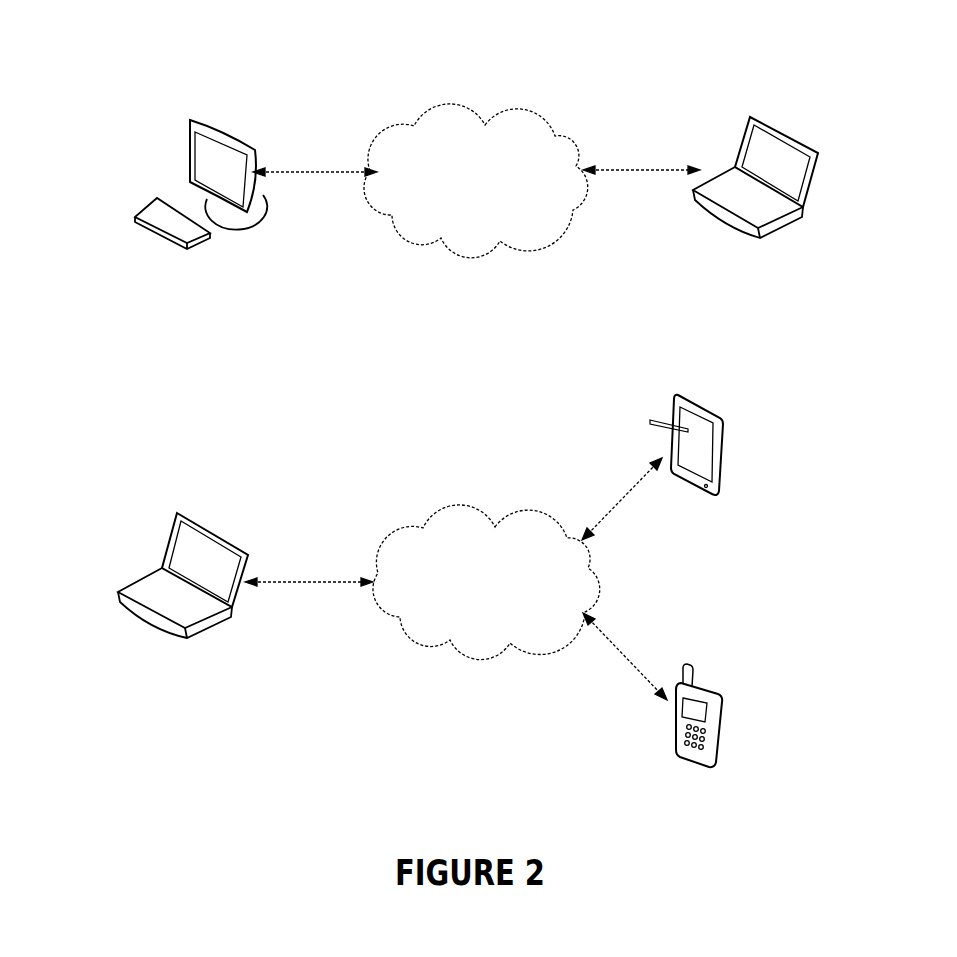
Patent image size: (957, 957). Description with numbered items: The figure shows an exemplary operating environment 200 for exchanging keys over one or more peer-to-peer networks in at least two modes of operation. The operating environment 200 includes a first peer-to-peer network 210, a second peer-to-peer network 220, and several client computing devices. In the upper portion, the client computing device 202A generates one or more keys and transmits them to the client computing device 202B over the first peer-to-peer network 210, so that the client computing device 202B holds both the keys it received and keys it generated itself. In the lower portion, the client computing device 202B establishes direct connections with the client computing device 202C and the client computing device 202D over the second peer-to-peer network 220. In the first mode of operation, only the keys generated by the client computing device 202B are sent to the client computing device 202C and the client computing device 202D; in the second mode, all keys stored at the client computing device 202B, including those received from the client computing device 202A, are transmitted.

The operating environment 200 is at (846, 89).
The first peer-to-peer network 210 is at (485, 122).
The second peer-to-peer network 220 is at (495, 526).
The client computing device 202A is at (190, 158).
The client computing device 202B is at (813, 188).
The client computing device 202C is at (723, 447).
The client computing device 202D is at (725, 712).